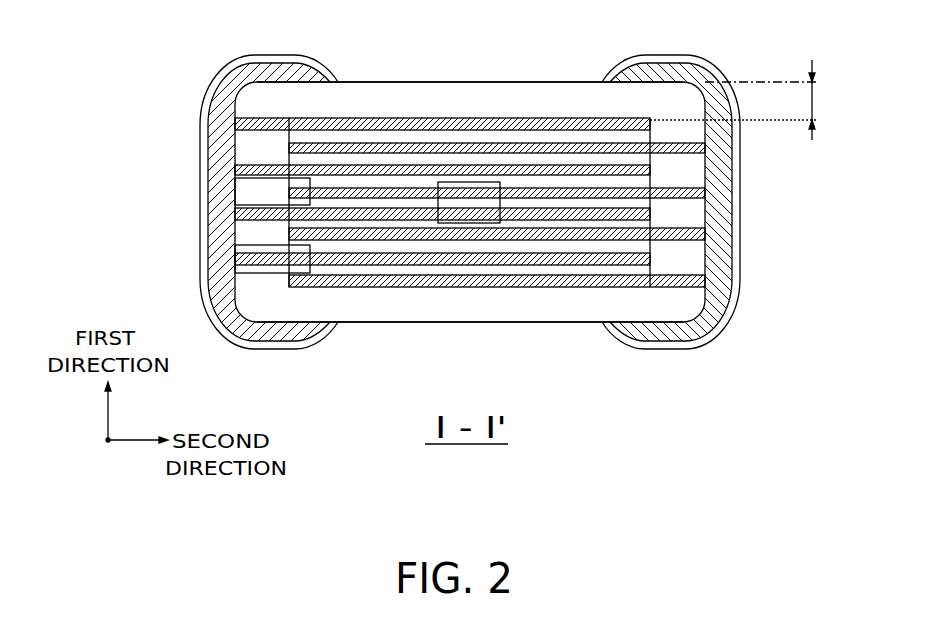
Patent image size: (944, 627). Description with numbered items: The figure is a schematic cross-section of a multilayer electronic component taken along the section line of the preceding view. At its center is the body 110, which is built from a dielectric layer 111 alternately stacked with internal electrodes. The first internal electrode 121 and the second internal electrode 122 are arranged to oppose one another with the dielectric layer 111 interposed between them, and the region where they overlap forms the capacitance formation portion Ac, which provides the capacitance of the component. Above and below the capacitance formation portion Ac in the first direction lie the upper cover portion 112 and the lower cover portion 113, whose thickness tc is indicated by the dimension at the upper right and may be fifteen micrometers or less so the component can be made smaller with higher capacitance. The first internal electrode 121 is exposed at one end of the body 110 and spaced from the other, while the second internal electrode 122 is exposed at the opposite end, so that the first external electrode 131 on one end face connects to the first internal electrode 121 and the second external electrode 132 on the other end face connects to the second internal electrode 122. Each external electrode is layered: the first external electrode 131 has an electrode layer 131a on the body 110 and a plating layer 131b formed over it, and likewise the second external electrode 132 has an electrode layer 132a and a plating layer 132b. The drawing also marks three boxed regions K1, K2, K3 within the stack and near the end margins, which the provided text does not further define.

The body 110 is at (481, 192).
The dielectric layer 111 is at (334, 150).
The upper cover portion 112 is at (467, 82).
The lower cover portion 113 is at (482, 305).
The first internal electrode 121 is at (512, 120).
The second internal electrode 122 is at (577, 147).
The first external electrode 131 is at (232, 200).
The electrode layer 131a is at (218, 172).
The plating layer 131b is at (205, 206).
The second external electrode 132 is at (706, 200).
The electrode layer 132a is at (718, 172).
The plating layer 132b is at (733, 206).
The capacitance formation portion Ac is at (568, 290).
The thickness of the cover portion tc is at (772, 100).
The first region K1 is at (473, 223).
The second region K2 is at (200, 218).
The third region K3 is at (200, 282).